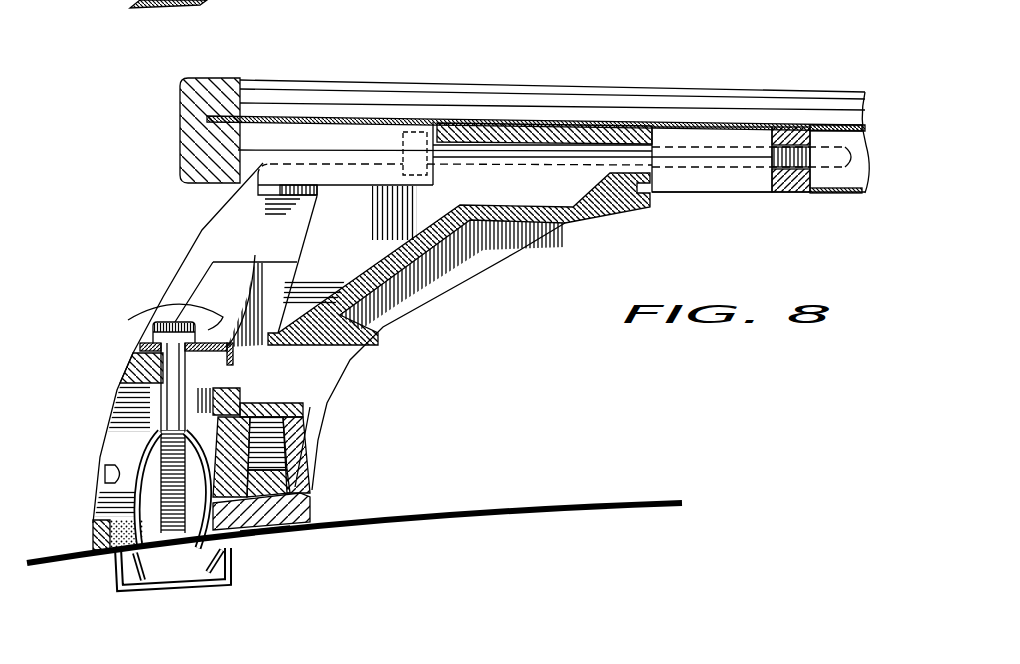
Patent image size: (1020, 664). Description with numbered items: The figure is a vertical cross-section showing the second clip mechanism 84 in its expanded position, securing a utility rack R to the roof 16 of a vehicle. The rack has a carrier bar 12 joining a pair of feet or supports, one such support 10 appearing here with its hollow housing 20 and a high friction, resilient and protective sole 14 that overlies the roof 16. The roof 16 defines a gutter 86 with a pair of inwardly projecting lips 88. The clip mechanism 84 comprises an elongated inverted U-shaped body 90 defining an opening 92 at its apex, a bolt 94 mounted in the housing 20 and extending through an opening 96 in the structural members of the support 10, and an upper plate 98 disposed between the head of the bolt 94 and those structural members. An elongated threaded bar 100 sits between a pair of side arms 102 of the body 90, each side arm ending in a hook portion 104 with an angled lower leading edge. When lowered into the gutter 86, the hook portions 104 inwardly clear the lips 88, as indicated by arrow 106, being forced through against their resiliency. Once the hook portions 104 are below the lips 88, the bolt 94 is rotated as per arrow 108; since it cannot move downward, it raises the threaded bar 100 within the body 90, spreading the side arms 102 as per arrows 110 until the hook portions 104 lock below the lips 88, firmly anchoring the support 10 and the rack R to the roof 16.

The support 10 is at (168, 235).
The carrier bar 12 is at (650, 76).
The utility rack R is at (473, 64).
The sole 14 is at (310, 503).
The roof 16 is at (576, 492).
The housing 20 is at (341, 212).
The second clip mechanism 84 is at (146, 408).
The gutter 86 is at (202, 572).
The lips 88 is at (110, 553).
The inverted U-shaped body 90 is at (214, 453).
The opening 92 is at (237, 400).
The bolt 94 is at (152, 335).
The opening 96 is at (140, 347).
The upper plate 98 is at (256, 262).
The threaded bar 100 is at (139, 450).
The side arms 102 is at (131, 499).
The hook portions 104 is at (213, 555).
The arrow 106 is at (128, 6).
The arrow 108 is at (163, 306).
The arrows 110 is at (262, 537).